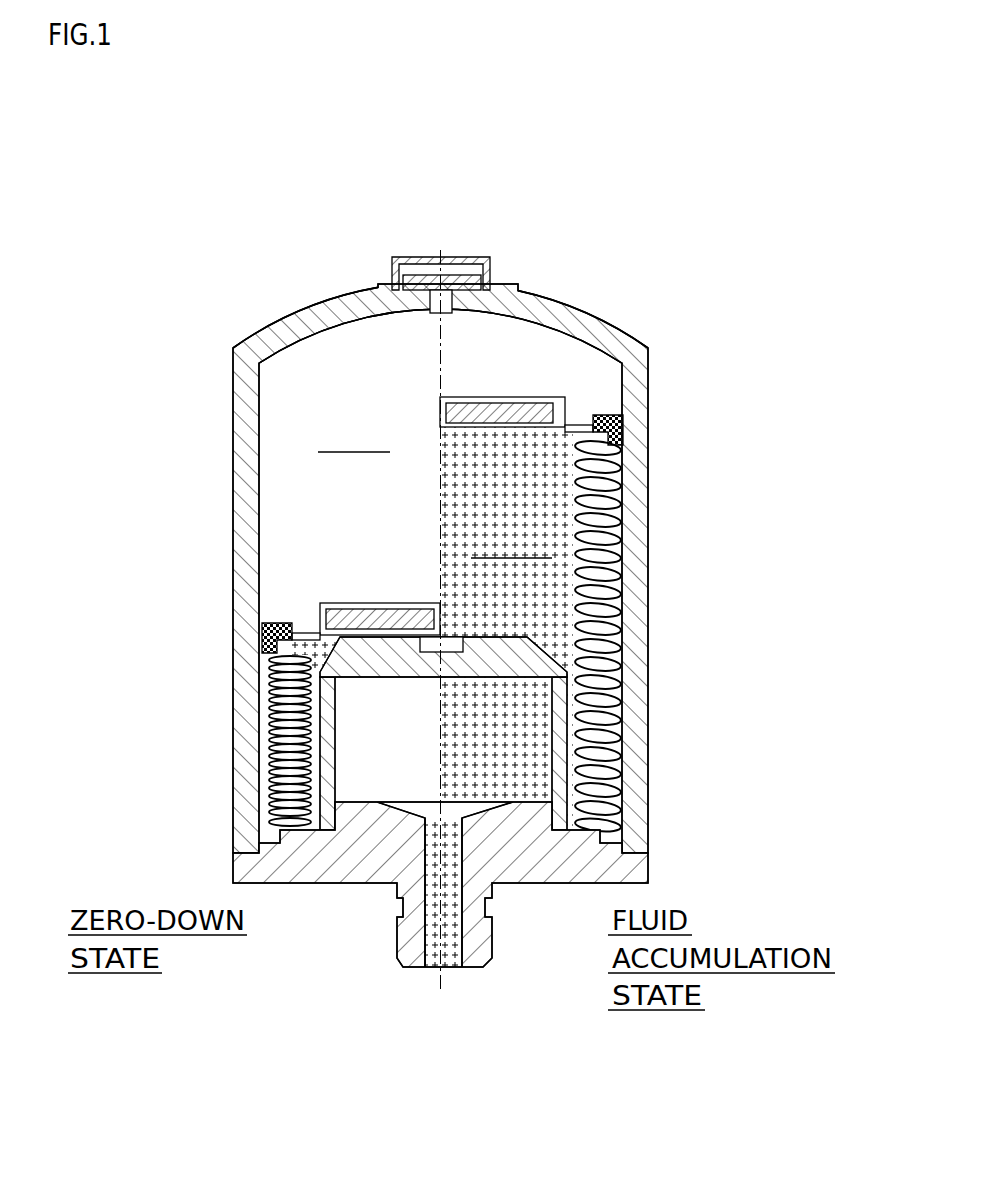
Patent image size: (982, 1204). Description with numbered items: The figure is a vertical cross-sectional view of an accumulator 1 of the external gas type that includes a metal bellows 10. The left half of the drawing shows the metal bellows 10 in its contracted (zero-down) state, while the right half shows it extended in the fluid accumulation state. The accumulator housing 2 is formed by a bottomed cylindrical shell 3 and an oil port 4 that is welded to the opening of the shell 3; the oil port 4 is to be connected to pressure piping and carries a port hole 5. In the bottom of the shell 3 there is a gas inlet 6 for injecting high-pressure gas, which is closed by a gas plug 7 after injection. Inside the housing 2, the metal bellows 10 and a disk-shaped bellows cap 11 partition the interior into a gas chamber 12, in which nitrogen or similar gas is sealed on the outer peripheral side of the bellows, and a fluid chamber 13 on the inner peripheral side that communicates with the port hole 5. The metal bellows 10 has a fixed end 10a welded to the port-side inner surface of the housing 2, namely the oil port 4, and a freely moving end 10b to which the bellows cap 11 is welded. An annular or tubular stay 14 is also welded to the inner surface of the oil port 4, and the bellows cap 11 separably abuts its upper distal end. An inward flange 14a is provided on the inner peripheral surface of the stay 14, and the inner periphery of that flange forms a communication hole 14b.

The accumulator 1 is at (207, 300).
The accumulator housing 2 is at (552, 300).
The shell 3 is at (275, 340).
The oil port 4 is at (525, 850).
The port hole 5 is at (442, 937).
The gas inlet 6 is at (472, 282).
The gas plug 7 is at (415, 285).
The metal bellows 10 is at (448, 637).
The fixed end 10a is at (587, 828).
The freely moving end 10b is at (592, 443).
The bellows cap 11 is at (533, 397).
The gas chamber 12 is at (340, 352).
The fluid chamber 13 is at (553, 598).
The stay 14 is at (367, 759).
The inward flange 14a is at (325, 632).
The communication hole 14b is at (419, 689).